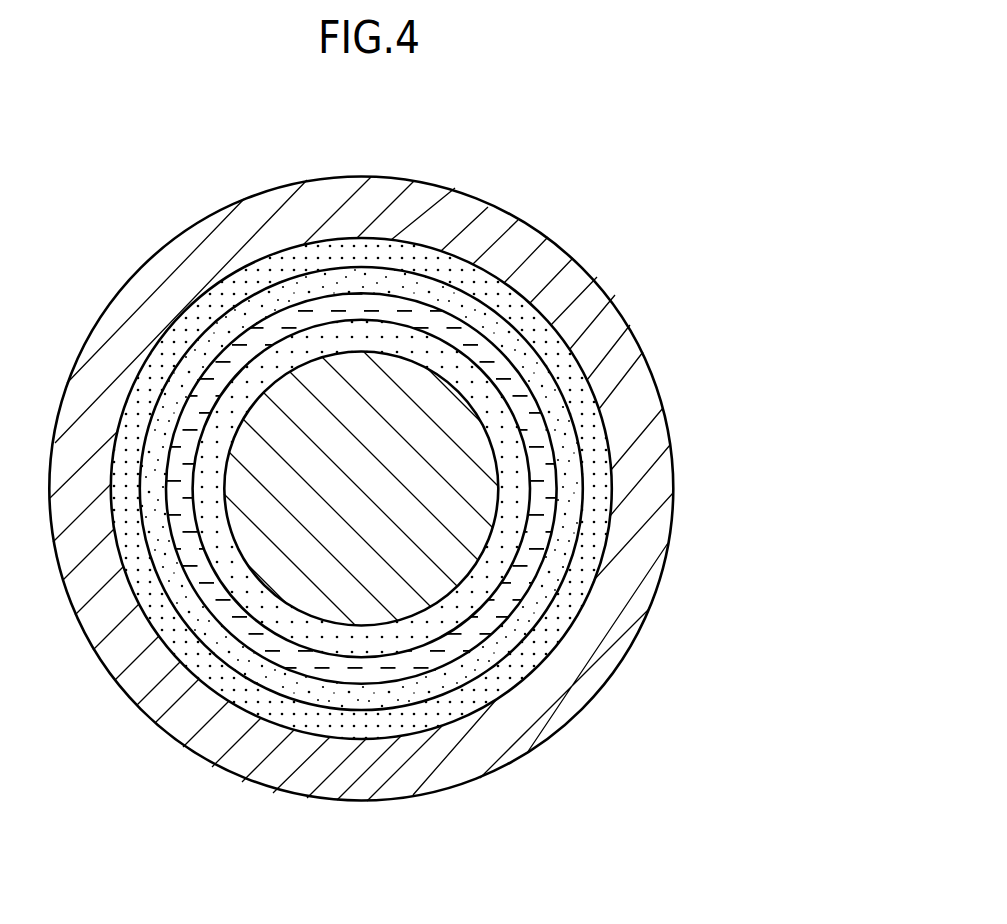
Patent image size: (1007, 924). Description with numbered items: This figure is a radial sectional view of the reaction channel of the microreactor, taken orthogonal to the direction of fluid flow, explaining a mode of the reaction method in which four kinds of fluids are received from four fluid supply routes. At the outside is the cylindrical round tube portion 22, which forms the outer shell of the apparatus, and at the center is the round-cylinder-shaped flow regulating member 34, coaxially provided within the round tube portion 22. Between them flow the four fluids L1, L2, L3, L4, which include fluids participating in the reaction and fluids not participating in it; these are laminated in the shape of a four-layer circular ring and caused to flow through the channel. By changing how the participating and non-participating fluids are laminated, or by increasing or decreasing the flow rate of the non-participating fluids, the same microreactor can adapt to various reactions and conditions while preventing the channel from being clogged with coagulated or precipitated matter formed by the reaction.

The round tube portion 22 is at (517, 742).
The fluid L1 is at (537, 323).
The fluid L2 is at (547, 390).
The fluid L3 is at (542, 478).
The fluid L4 is at (488, 575).
The flow regulating member 34 is at (350, 388).